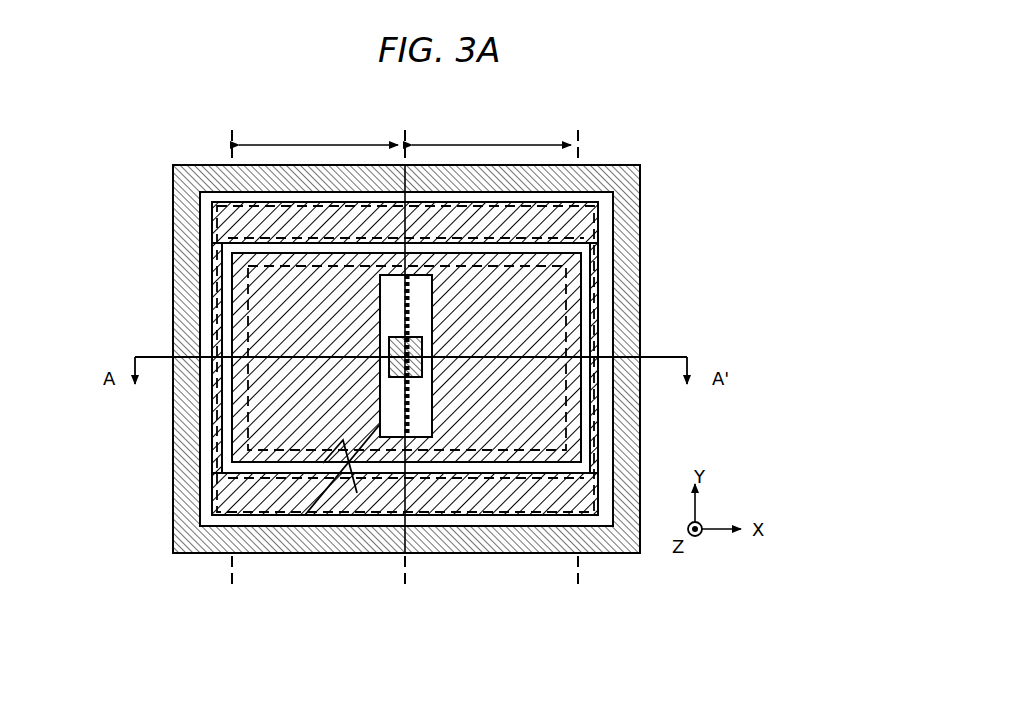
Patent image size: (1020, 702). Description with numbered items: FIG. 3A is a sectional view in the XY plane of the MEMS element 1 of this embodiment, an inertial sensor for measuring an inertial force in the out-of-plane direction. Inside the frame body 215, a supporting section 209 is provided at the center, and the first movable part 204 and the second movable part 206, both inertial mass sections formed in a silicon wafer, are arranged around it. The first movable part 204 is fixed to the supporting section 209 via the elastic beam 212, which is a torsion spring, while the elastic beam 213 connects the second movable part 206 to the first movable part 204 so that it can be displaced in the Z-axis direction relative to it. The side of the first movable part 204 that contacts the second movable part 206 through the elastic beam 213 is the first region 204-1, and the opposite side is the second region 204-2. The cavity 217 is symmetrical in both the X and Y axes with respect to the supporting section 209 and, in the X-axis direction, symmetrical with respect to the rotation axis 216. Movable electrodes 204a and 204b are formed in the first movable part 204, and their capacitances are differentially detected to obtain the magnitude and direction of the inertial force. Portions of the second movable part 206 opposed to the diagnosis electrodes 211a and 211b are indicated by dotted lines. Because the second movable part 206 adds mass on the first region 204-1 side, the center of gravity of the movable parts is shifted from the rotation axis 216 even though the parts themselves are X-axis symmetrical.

The MEMS element 1 is at (124, 145).
The first movable part 204 is at (598, 272).
The first region 204-1 is at (318, 126).
The second region 204-2 is at (491, 126).
The movable electrode 204a is at (250, 447).
The movable electrode 204b is at (598, 303).
The second movable part 206 is at (598, 192).
The supporting section 209 is at (421, 378).
The diagnosis electrode 211a is at (240, 212).
The diagnosis electrode 211b is at (232, 559).
The elastic beam 212 is at (335, 445).
The elastic beam 213 is at (222, 308).
The frame body 215 is at (632, 433).
The rotation axis 216 is at (406, 555).
The cavity 217 is at (222, 350).